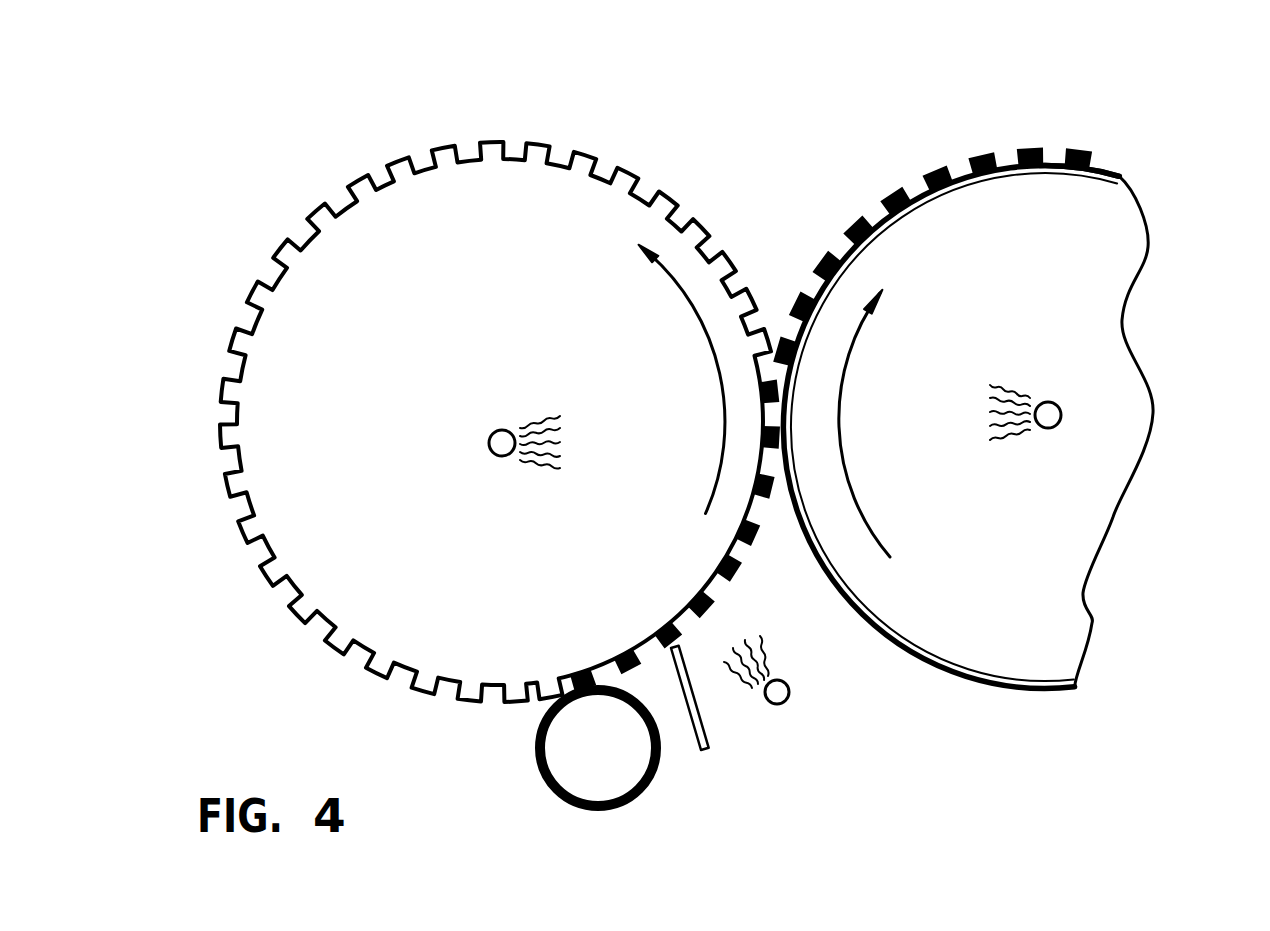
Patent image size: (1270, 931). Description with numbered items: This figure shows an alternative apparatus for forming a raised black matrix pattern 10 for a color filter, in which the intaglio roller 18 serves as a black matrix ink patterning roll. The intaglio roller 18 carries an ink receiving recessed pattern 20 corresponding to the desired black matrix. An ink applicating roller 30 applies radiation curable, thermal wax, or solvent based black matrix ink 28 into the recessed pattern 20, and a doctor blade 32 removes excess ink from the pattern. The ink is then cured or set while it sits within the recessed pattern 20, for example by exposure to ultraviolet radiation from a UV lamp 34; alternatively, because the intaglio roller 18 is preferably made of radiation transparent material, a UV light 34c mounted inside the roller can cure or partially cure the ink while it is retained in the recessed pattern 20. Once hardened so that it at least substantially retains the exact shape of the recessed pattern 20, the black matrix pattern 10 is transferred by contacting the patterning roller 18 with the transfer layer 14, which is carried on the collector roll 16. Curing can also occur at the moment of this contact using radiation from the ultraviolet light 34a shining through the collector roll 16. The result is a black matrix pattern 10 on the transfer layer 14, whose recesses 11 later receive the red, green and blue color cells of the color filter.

The black matrix pattern 10 is at (1073, 143).
The recesses 11 is at (1007, 163).
The transfer layer 14 is at (848, 608).
The collector roll 16 is at (968, 430).
The intaglio roller 18 is at (500, 399).
The recessed pattern 20 is at (567, 160).
The black matrix ink 28 is at (567, 752).
The ink applicating roller 30 is at (622, 765).
The doctor blade 32 is at (705, 752).
The UV lamp 34 is at (788, 700).
The ultraviolet light 34a is at (1057, 428).
The UV light 34c is at (489, 447).